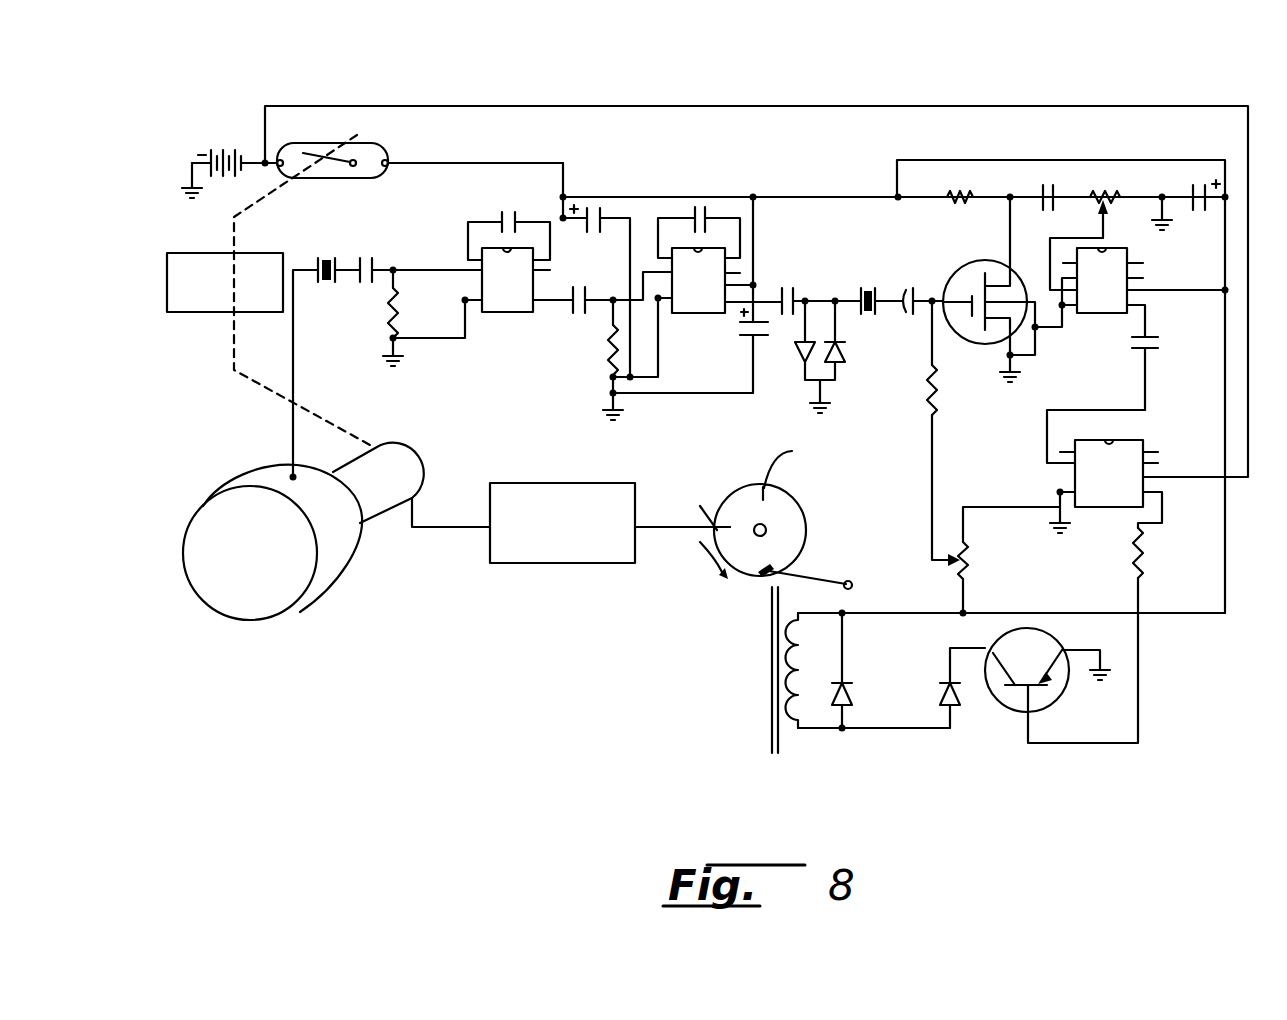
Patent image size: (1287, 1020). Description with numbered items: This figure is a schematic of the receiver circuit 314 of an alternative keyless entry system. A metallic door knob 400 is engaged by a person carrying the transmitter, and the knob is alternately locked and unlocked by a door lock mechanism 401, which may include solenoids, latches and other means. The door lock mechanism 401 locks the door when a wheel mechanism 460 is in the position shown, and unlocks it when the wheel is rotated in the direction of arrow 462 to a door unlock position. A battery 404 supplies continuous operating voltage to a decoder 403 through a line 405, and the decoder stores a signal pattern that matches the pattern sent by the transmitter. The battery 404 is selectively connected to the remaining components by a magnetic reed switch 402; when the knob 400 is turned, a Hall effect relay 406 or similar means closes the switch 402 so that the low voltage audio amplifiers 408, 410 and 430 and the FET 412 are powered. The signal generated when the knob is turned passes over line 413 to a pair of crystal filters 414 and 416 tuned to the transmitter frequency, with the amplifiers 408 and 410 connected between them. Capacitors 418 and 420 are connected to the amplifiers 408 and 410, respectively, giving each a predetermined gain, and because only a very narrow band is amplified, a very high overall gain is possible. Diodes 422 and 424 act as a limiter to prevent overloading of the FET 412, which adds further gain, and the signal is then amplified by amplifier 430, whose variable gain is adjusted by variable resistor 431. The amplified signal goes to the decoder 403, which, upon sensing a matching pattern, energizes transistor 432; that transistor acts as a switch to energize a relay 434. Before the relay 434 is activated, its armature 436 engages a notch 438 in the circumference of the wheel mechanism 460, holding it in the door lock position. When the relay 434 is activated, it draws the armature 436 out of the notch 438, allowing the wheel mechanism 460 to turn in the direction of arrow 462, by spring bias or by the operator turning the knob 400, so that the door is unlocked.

The receiver circuit 314 is at (331, 82).
The door knob 400 is at (340, 555).
The door lock mechanism 401 is at (531, 478).
The magnetic reed switch 402 is at (372, 147).
The decoder 403 is at (1140, 440).
The battery 404 is at (232, 127).
The line 405 is at (826, 104).
The Hall effect relay 406 is at (215, 312).
The low voltage audio amplifier 408 is at (530, 313).
The low voltage audio amplifier 410 is at (712, 313).
The FET 412 is at (955, 267).
The line 413 is at (294, 350).
The crystal filter 414 is at (326, 284).
The crystal filter 416 is at (862, 287).
The capacitor 418 is at (502, 214).
The capacitor 420 is at (692, 207).
The diode 422 is at (790, 366).
The diode 424 is at (848, 349).
The amplifier 430 is at (1110, 313).
The variable resistor 431 is at (1108, 176).
The transistor 432 is at (1000, 714).
The relay 434 is at (786, 733).
The armature 436 is at (832, 578).
The notch 438 is at (770, 568).
The wheel mechanism 460 is at (746, 578).
The arrow 462 is at (703, 560).